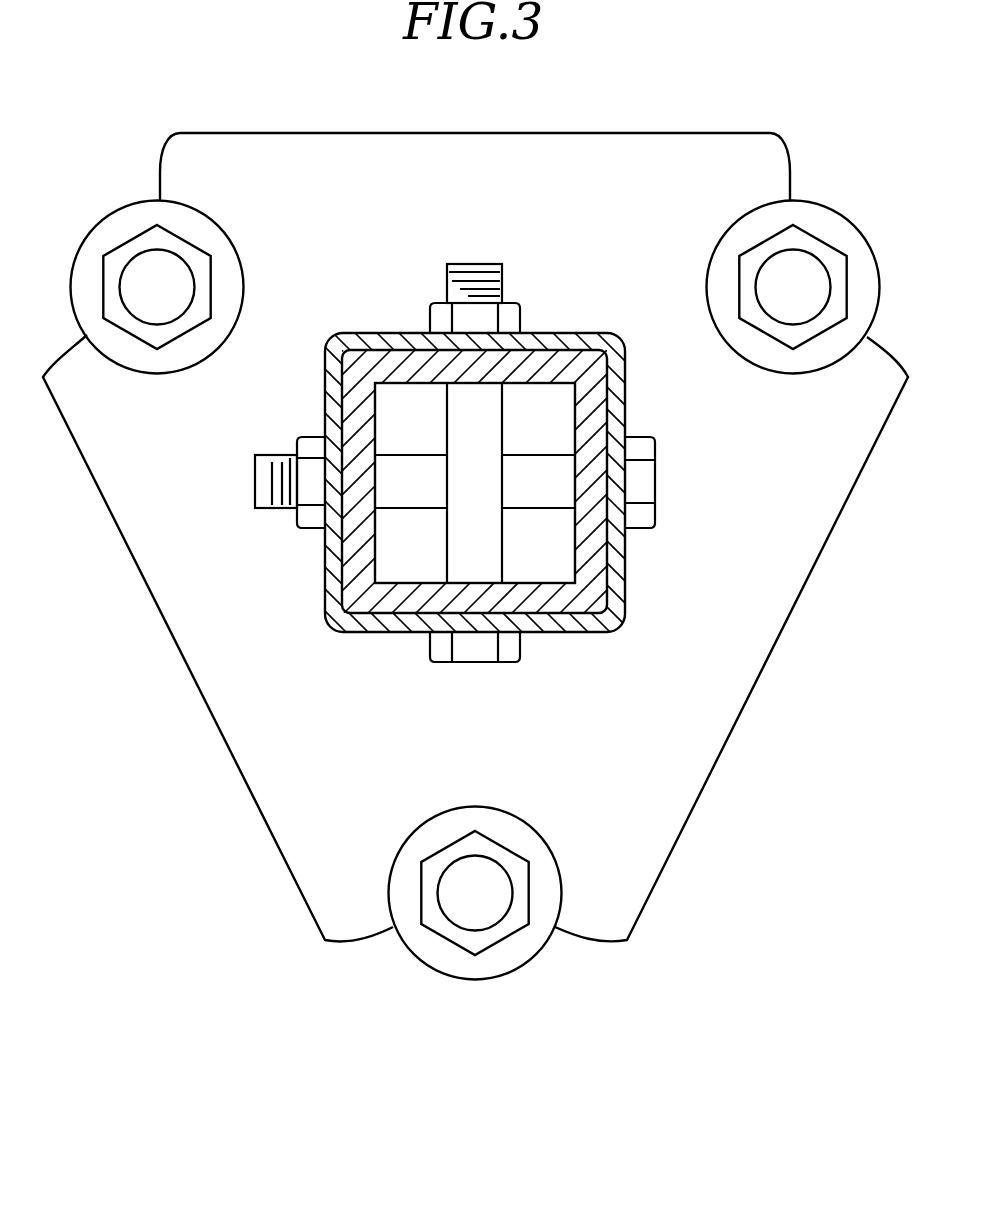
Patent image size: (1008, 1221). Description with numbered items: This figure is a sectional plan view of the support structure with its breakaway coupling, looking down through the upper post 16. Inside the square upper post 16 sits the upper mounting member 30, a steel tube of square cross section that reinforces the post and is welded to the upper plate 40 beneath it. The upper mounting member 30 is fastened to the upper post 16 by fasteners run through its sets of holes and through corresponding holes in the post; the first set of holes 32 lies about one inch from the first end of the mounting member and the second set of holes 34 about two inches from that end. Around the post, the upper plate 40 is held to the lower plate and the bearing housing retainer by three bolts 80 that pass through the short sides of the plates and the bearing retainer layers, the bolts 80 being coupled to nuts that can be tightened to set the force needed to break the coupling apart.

The upper post 16 is at (617, 402).
The upper mounting member 30 is at (593, 577).
The first set of holes 32 is at (380, 452).
The second set of holes 34 is at (545, 398).
The upper plate 40 is at (697, 715).
The bolts 80 is at (156, 275).